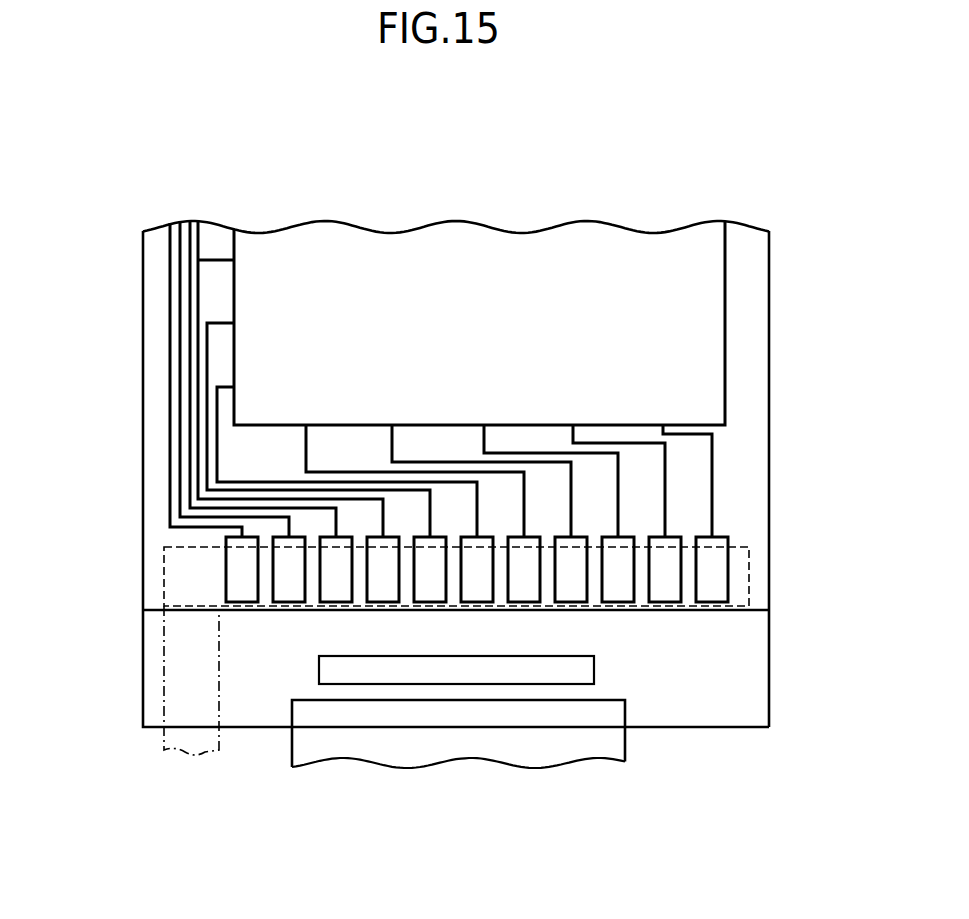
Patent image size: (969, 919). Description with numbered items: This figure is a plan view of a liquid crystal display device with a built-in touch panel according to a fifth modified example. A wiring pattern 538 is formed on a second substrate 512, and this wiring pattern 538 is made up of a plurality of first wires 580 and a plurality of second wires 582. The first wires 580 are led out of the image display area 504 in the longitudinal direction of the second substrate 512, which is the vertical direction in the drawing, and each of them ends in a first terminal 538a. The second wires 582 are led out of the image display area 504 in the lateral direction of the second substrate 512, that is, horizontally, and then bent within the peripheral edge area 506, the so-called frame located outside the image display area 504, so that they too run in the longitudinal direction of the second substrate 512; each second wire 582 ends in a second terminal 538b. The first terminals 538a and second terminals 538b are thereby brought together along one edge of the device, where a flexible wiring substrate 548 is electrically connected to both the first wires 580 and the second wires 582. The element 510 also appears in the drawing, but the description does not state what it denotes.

The integrated circuit chip 504 is at (505, 357).
The substrate 506 is at (155, 385).
The housing portion 510 is at (755, 668).
The side wall portion 512 is at (757, 385).
The wiring pattern 538 is at (350, 167).
The terminals (first side) 538a is at (728, 572).
The terminals (second side) 538b is at (226, 576).
The phantom element 548 is at (218, 707).
The second wiring lines 580 is at (712, 490).
The first wiring lines 582 is at (170, 499).